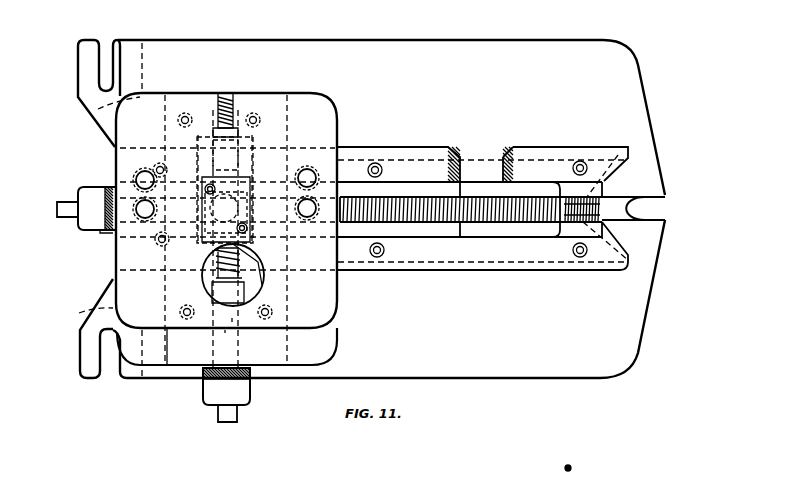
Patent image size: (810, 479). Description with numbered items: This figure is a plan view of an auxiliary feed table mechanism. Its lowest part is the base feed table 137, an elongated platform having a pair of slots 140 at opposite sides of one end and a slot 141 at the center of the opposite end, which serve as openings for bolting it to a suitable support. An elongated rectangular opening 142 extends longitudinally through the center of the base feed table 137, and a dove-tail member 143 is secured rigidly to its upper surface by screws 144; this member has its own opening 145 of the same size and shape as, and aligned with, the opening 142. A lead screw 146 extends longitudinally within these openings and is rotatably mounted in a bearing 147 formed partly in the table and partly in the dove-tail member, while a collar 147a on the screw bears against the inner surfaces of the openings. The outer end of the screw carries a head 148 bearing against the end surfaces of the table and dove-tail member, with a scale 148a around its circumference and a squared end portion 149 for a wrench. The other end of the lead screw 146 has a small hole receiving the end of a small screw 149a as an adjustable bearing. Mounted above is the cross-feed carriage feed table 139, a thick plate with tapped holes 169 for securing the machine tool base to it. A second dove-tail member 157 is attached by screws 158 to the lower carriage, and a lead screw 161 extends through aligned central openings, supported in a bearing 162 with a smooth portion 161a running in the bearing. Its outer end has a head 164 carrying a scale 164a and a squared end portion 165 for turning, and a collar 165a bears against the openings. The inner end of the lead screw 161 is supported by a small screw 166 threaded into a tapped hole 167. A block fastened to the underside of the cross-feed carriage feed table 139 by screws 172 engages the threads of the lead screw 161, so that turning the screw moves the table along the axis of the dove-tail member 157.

The base feed table 137 is at (377, 77).
The cross-feed carriage feed table 139 is at (272, 107).
The slots 140 is at (107, 53).
The slot 141 is at (652, 218).
The elongated rectangular opening 142 is at (480, 183).
The dove-tail member 143 is at (552, 140).
The screws 144 is at (160, 163).
The opening 145 is at (472, 233).
The lead screw 146 is at (402, 223).
The bearing 147 is at (157, 242).
The collar 147a is at (193, 230).
The head 148 is at (90, 213).
The scale 148a is at (103, 233).
The squared end portion 149 is at (62, 211).
The small screw 149a is at (608, 191).
The dove-tail member 157 is at (283, 337).
The screws 158 is at (192, 138).
The lead screw 161 is at (242, 260).
The smooth portion 161a is at (221, 336).
The bearing 162 is at (232, 320).
The head 164 is at (220, 394).
The scale 164a is at (238, 376).
The squared end portion 165 is at (230, 420).
The collar 165a is at (250, 273).
The small screw 166 is at (232, 93).
The tapped hole 167 is at (235, 107).
The tapped holes 169 is at (133, 203).
The screws 172 is at (207, 188).